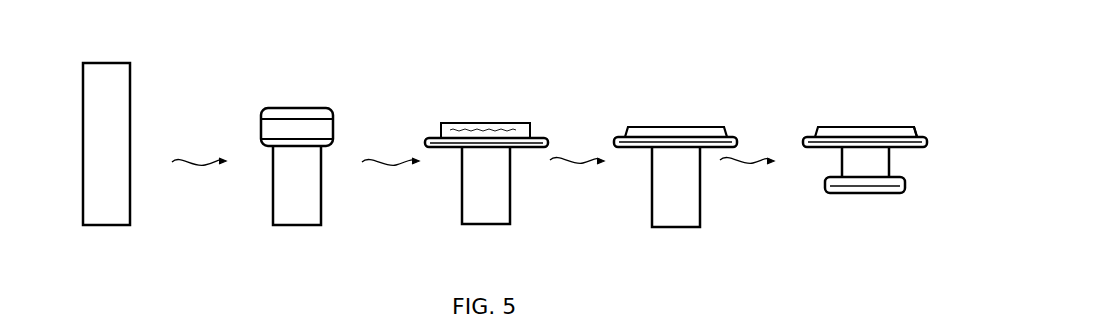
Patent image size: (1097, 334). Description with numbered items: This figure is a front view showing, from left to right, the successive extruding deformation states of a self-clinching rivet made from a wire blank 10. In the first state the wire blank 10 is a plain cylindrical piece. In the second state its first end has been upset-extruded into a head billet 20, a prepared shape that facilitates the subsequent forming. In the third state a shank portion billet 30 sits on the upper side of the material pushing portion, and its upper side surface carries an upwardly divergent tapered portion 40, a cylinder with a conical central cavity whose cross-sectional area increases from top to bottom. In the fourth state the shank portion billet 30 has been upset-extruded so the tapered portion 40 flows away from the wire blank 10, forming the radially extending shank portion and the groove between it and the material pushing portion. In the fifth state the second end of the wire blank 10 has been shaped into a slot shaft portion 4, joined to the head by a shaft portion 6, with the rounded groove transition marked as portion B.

The wire blank 10 is at (83, 127).
The head billet 20 is at (320, 118).
The shank portion billet 30 is at (440, 130).
The tapered portion 40 is at (522, 122).
The portion B is at (907, 128).
The shaft portion 6 is at (885, 163).
The slot shaft portion 4 is at (888, 193).